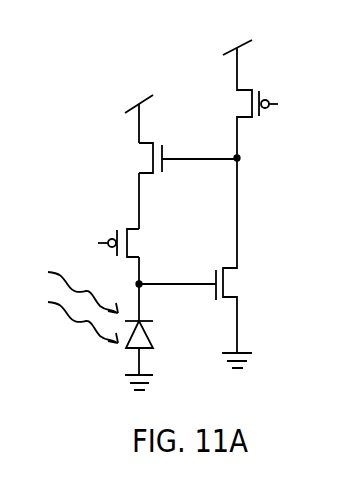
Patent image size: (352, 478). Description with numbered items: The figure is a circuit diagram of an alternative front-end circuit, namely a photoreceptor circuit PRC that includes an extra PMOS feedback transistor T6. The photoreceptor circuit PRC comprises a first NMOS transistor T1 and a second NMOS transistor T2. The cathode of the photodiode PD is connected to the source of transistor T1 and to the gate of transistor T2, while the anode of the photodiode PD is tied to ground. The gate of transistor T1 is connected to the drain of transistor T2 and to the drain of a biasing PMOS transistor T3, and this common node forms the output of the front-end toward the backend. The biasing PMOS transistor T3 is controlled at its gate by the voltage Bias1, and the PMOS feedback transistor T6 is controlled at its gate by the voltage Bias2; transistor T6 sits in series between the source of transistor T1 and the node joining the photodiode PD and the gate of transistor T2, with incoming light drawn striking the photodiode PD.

The photoreceptor circuit PRC is at (126, 95).
The first NMOS transistor T1 is at (151, 161).
The biasing PMOS transistor T3 is at (250, 107).
The bias voltage Bias1 is at (299, 107).
The bias voltage Bias2 is at (77, 245).
The PMOS feedback transistor T6 is at (127, 245).
The second NMOS transistor T2 is at (227, 283).
The photodiode PD is at (152, 339).